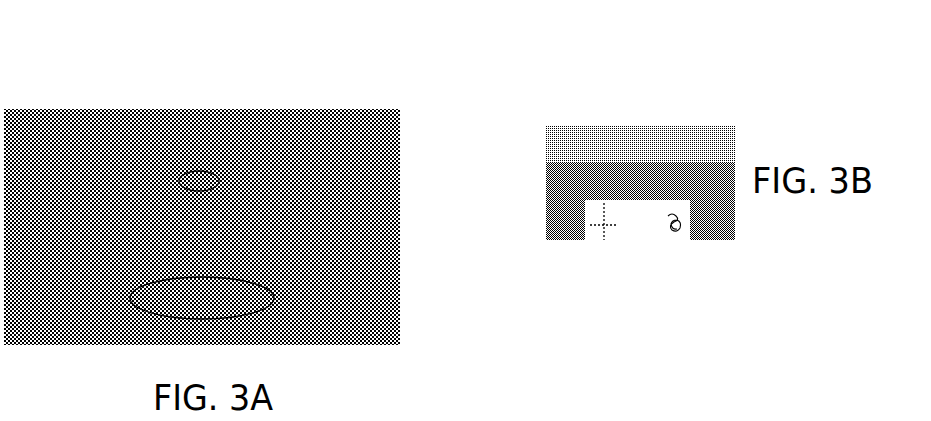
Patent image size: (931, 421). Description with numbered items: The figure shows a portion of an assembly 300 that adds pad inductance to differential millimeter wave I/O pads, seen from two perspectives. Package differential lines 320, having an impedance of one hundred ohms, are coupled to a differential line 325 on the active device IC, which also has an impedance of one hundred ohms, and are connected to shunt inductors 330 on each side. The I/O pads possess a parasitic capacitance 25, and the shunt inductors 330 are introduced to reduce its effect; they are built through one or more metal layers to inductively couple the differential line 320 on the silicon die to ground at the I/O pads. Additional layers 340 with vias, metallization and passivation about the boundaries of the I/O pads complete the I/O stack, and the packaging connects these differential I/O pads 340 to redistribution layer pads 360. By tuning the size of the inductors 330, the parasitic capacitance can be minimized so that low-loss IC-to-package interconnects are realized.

In FIG. 3A, the assembly 300 is at (78, 33).
In FIG. 3A, the package differential lines 320 is at (219, 191).
In FIG. 3B, the package differential lines 320 is at (728, 208).
In FIG. 3A, the differential line 325 is at (274, 299).
In FIG. 3A, the shunt inductors 330 is at (378, 182).
In FIG. 3B, the shunt inductors 330 is at (676, 225).
In FIG. 3A, the additional layers 340 is at (313, 222).
In FIG. 3B, the additional layers 340 is at (582, 199).
In FIG. 3A, the redistribution layer (RDL) pads 360 is at (340, 132).
In FIG. 3B, the redistribution layer (RDL) pads 360 is at (557, 140).
In FIG. 3B, the parasitic capacitance 25 is at (623, 214).